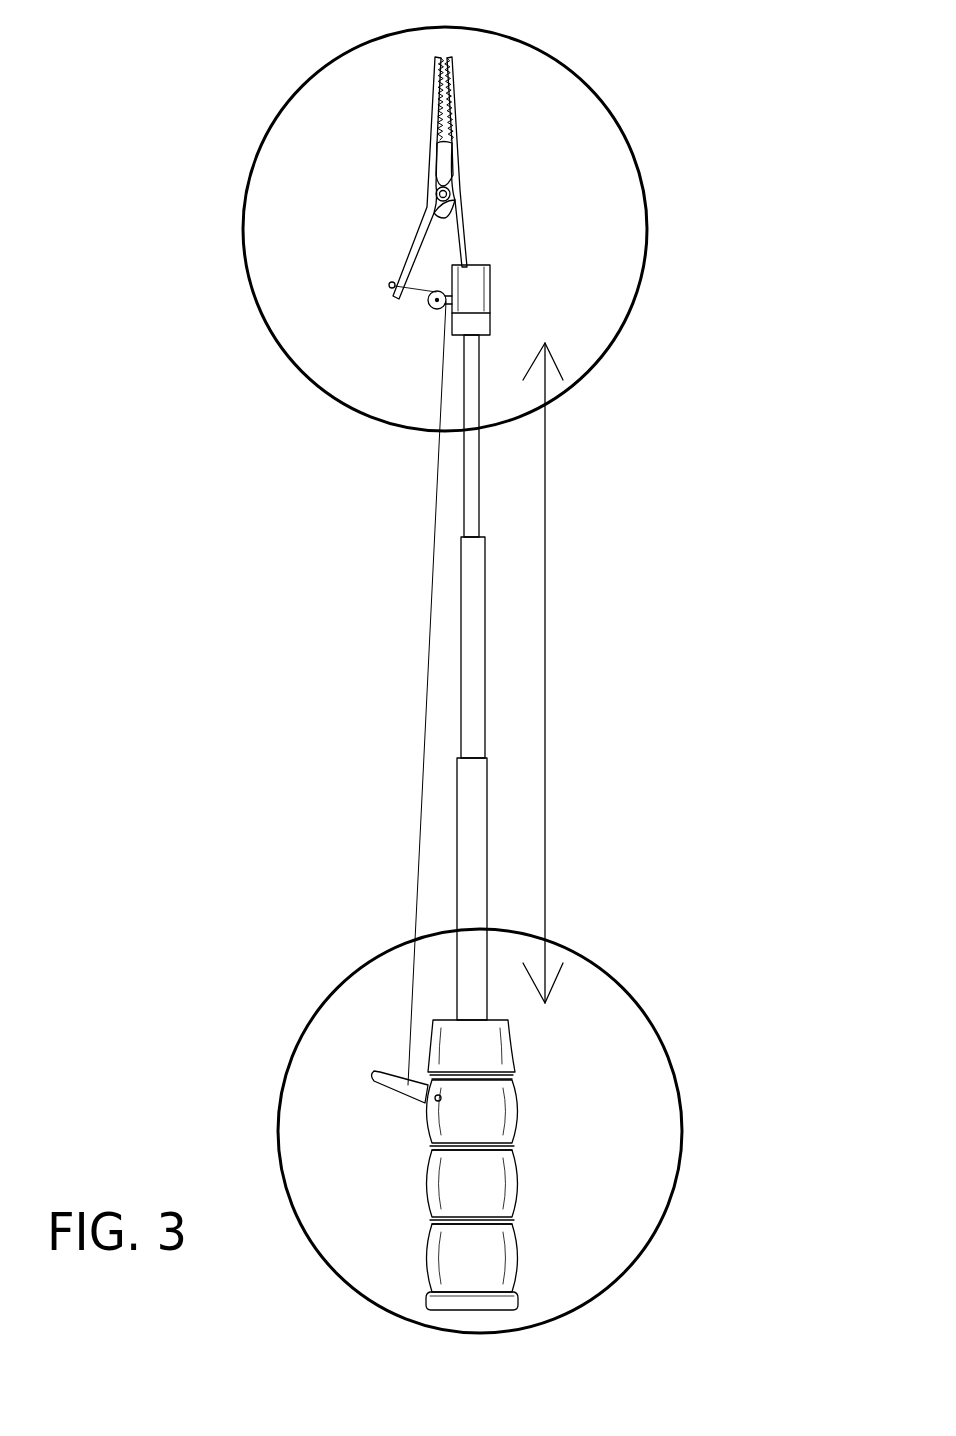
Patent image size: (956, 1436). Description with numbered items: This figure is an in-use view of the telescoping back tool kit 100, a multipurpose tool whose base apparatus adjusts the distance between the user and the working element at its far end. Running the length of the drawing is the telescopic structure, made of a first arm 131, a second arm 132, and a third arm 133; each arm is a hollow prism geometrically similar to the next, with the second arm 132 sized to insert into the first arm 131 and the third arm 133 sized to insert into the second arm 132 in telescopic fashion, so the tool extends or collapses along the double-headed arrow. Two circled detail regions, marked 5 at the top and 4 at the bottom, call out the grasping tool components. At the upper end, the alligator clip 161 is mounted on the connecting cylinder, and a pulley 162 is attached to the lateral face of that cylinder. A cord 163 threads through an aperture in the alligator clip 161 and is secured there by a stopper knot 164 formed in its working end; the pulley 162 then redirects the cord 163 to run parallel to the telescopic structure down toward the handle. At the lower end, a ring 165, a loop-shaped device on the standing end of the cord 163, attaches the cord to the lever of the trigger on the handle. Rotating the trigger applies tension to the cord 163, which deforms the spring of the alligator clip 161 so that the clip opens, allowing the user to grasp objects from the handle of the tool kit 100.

The telescoping back tool kit 100 is at (150, 98).
The first arm 131 is at (476, 820).
The second arm 132 is at (478, 641).
The third arm 133 is at (474, 483).
The alligator clip 161 is at (463, 202).
The pulley 162 is at (430, 304).
The cord 163 is at (435, 582).
The stopper knot 164 is at (388, 285).
The ring 165 is at (407, 1082).
The detail view circle FIG. 4 is at (683, 1132).
The detail view circle FIG. 5 is at (647, 230).